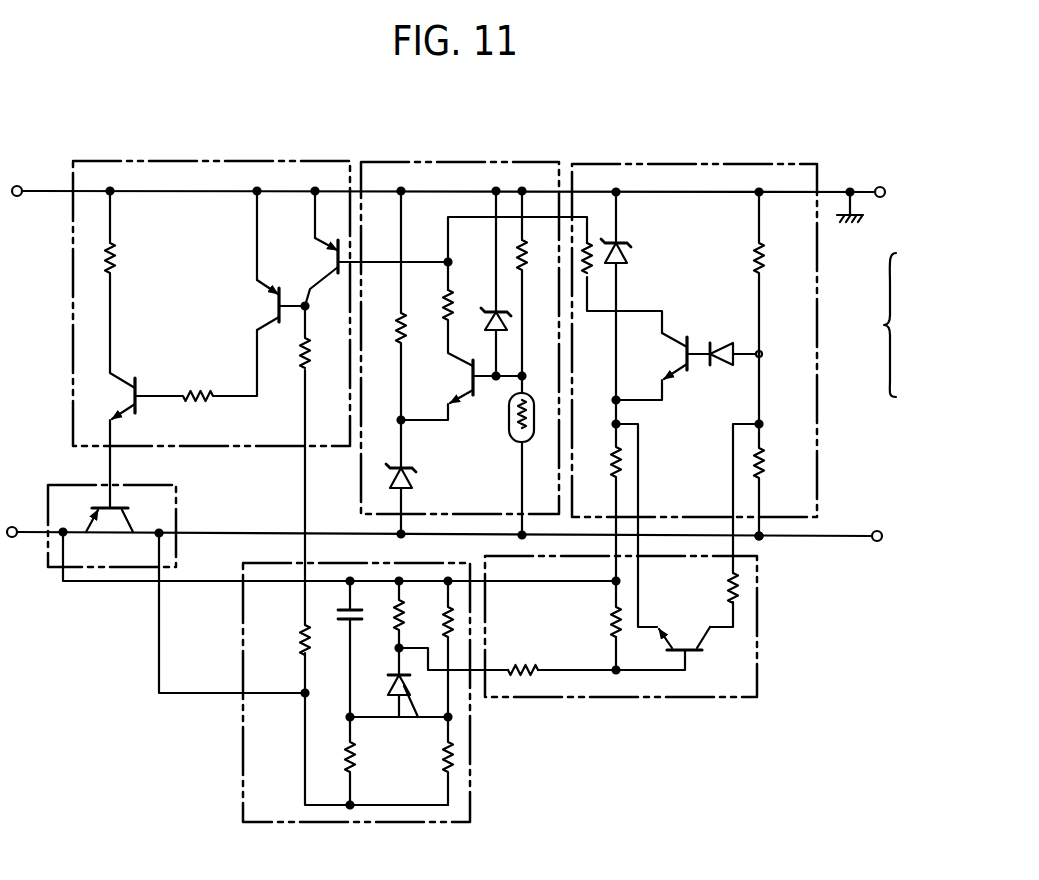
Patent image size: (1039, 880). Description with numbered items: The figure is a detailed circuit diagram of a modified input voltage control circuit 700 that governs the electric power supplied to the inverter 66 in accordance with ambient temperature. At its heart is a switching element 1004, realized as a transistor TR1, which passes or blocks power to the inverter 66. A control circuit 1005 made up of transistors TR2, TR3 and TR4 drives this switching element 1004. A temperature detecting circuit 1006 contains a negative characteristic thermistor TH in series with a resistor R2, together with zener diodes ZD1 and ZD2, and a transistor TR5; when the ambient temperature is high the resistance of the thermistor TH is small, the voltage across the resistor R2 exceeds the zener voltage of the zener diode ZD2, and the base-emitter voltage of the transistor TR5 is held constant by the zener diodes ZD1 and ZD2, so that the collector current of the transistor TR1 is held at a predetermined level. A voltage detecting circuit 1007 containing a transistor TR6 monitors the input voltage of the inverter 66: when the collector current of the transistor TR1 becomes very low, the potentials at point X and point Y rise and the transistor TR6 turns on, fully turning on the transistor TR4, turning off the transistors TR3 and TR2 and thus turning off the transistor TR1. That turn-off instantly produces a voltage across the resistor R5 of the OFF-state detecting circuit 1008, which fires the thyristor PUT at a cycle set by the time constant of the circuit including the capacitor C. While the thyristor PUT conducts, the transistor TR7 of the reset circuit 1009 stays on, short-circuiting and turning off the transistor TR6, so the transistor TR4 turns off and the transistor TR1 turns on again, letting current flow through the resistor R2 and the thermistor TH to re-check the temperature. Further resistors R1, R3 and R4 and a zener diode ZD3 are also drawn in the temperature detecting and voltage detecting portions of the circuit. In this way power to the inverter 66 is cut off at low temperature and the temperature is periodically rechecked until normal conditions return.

The switching element 1004 is at (176, 497).
The control circuit 1005 is at (232, 160).
The temperature detecting circuit 1006 is at (472, 162).
The voltage detecting circuit 1007 is at (679, 164).
The OFF-state detecting circuit 1008 is at (470, 740).
The reset circuit 1009 is at (757, 655).
The input voltage control circuit 700 is at (118, 652).
The transistor TR1 is at (108, 515).
The transistor TR2 is at (131, 390).
The transistor TR3 is at (270, 303).
The transistor TR4 is at (334, 259).
The transistor TR5 is at (463, 355).
The transistor TR6 is at (668, 346).
The transistor TR7 is at (680, 640).
The resistor R1 is at (398, 328).
The resistor R2 is at (527, 262).
The resistor R3 is at (763, 270).
The resistor R4 is at (763, 456).
The resistor R5 is at (298, 640).
The zener diode ZD1 is at (413, 477).
The zener diode ZD2 is at (488, 318).
The zener diode ZD3 is at (628, 252).
The thermistor TH is at (508, 422).
The capacitor C is at (361, 620).
The thyristor PUT is at (404, 664).
The point X is at (765, 538).
The point Y is at (764, 354).
The inverter 66 is at (947, 325).